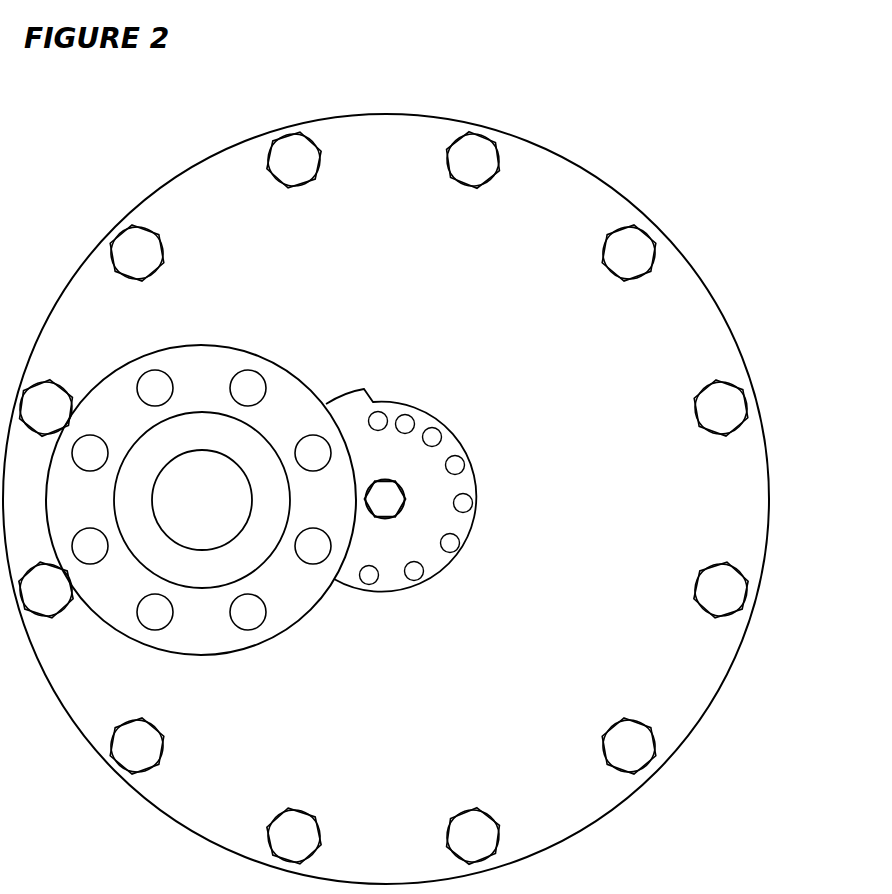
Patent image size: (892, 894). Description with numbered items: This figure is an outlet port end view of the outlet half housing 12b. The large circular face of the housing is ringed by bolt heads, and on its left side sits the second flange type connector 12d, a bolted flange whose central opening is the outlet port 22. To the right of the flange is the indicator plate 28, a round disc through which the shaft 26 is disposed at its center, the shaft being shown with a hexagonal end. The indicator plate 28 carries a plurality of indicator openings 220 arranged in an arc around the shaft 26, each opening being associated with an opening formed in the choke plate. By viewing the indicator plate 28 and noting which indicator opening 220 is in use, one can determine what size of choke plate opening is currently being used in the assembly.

The outlet half housing 12b is at (582, 170).
The second flange type connector 12d is at (284, 366).
The outlet port 22 is at (226, 466).
The shaft 26 is at (383, 500).
The indicator plate 28 is at (427, 410).
The indicator openings 220 is at (466, 493).